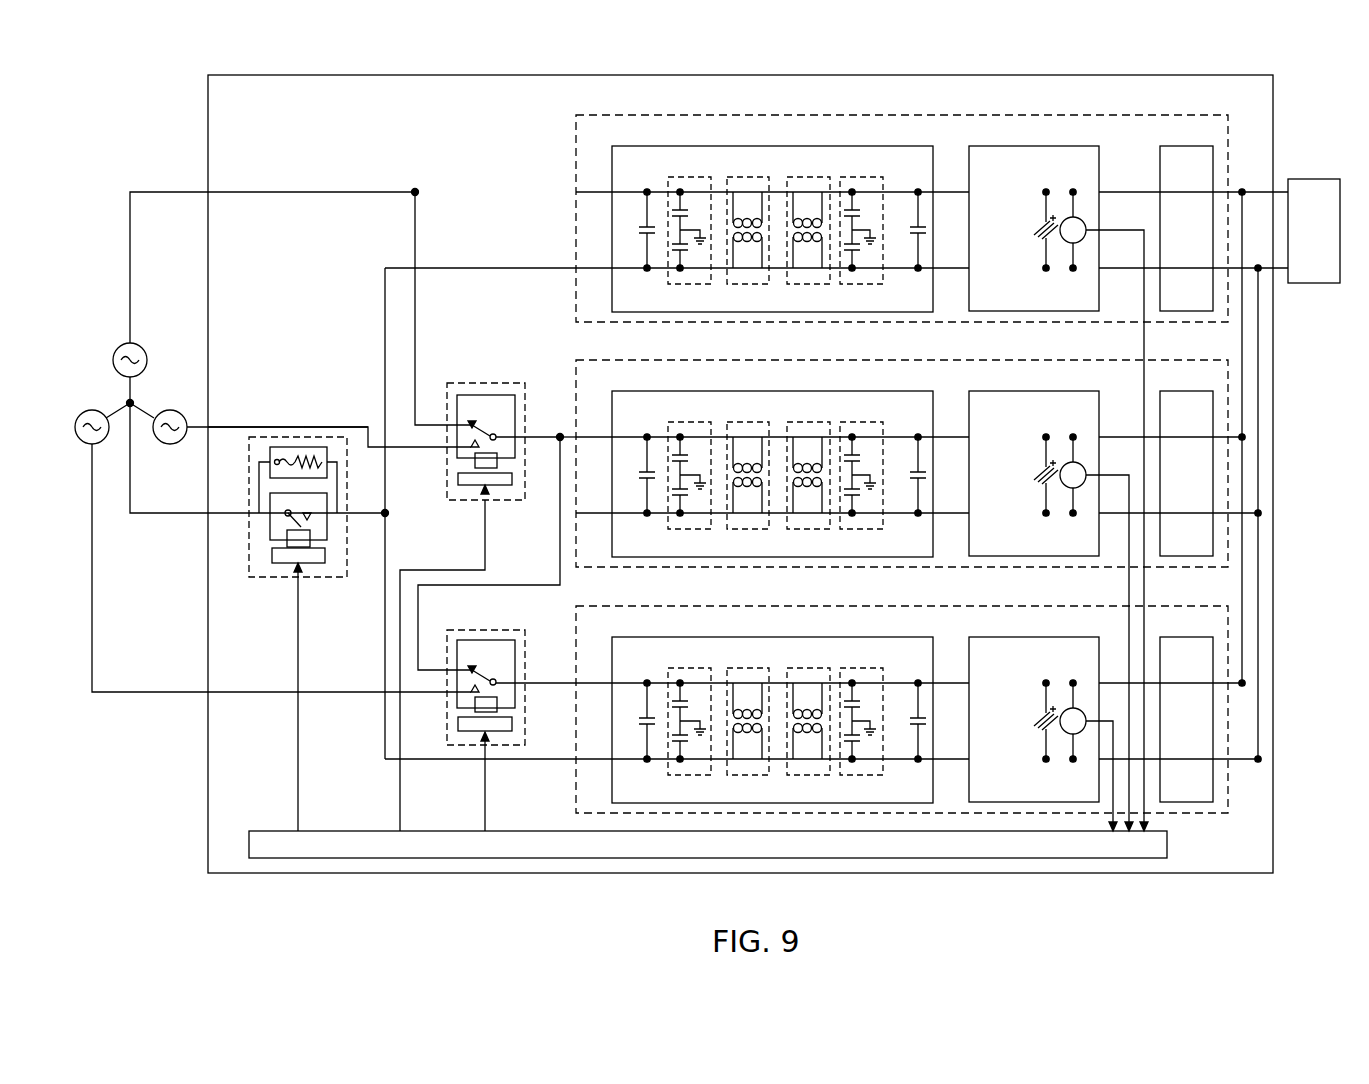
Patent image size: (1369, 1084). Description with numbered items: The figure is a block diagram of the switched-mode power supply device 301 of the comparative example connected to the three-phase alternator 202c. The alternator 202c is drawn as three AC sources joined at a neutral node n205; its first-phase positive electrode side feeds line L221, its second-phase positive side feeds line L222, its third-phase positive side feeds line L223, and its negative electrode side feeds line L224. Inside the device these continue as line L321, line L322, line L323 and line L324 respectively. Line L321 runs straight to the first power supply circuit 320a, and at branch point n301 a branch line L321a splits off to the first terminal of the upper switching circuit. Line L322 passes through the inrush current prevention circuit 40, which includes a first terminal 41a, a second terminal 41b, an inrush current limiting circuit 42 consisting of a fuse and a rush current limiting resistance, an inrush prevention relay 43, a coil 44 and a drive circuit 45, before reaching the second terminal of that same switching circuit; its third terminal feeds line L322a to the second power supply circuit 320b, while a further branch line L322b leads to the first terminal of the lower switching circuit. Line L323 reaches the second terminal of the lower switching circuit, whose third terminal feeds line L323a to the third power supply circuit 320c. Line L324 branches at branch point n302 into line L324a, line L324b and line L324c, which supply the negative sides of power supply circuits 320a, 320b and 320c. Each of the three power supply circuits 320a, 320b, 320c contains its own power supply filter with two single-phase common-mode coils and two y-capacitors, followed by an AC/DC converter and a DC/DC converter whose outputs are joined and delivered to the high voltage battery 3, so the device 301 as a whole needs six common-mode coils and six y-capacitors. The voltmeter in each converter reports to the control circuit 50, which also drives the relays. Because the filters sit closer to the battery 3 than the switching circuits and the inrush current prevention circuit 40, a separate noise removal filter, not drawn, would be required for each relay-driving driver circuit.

The switched-mode power supply device 301 is at (735, 75).
The power supply circuit 320a is at (922, 115).
The power supply circuit 320b is at (922, 360).
The power supply circuit 320c is at (922, 606).
The high voltage battery 3 is at (1312, 179).
The control circuit 50 is at (1167, 845).
The inrush current prevention circuit 40 is at (294, 634).
The first terminal 41a is at (262, 513).
The second terminal 41b is at (340, 513).
The inrush current limiting circuit 42 is at (270, 458).
The inrush prevention relay 43 is at (280, 560).
The coil 44 is at (318, 560).
The drive circuit 45 is at (291, 566).
The three-phase alternator 202c is at (177, 351).
The neutral node n205 is at (126, 403).
The branch point n301 is at (418, 196).
The branch point n302 is at (389, 518).
The line L221 is at (184, 192).
The line L222 is at (172, 446).
The line L223 is at (158, 694).
The line L224 is at (170, 515).
The line L321 is at (318, 192).
The line L321a is at (412, 240).
The line L322 is at (320, 427).
The line L322a is at (536, 430).
The line L322b is at (558, 560).
The line L323 is at (352, 694).
The line L323a is at (536, 676).
The line L324 is at (240, 515).
The line L324a is at (506, 268).
The line L324b is at (434, 516).
The line L324c is at (520, 762).